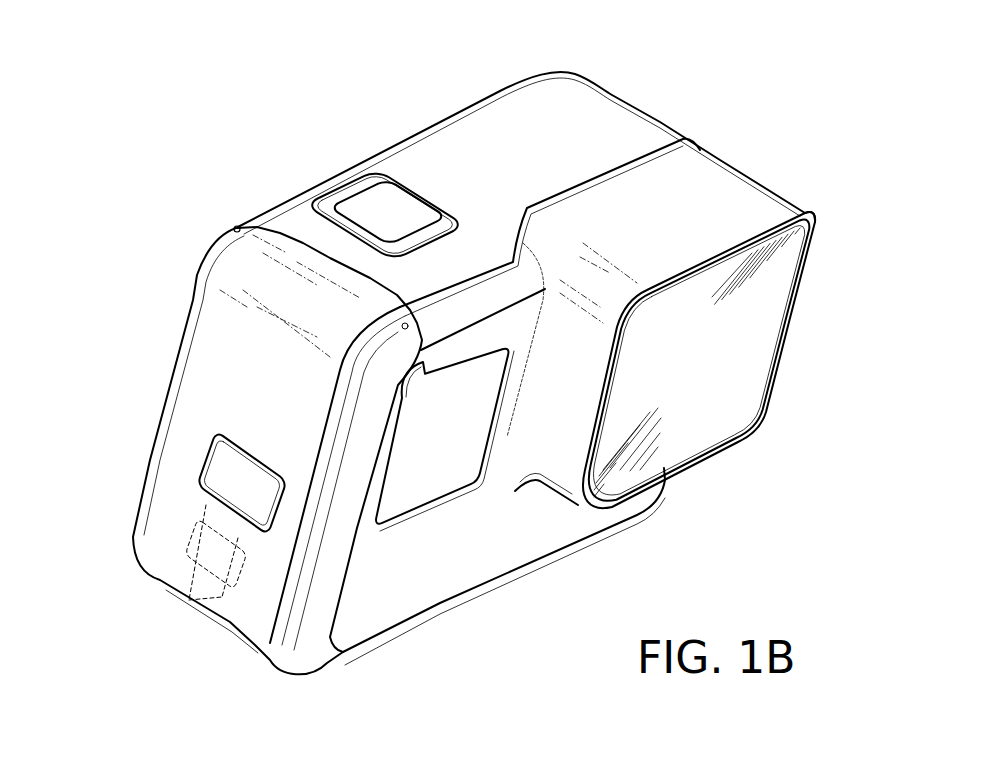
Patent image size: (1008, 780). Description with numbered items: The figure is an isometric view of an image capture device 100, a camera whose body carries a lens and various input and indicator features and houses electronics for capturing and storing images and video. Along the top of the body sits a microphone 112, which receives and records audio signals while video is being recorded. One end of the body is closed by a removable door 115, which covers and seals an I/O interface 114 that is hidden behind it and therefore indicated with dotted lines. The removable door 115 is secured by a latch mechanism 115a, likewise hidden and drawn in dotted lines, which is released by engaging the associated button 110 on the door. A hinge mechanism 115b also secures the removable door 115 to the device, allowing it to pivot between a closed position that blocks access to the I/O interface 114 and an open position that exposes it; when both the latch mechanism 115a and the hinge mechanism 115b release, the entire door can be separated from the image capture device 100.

The image capture device 100 is at (810, 162).
The button 110 is at (200, 488).
The microphone 112 is at (477, 158).
The I/O interface 114 is at (190, 556).
The removable door 115 is at (208, 314).
The latch mechanism 115a is at (193, 607).
The hinge mechanism 115b is at (234, 228).